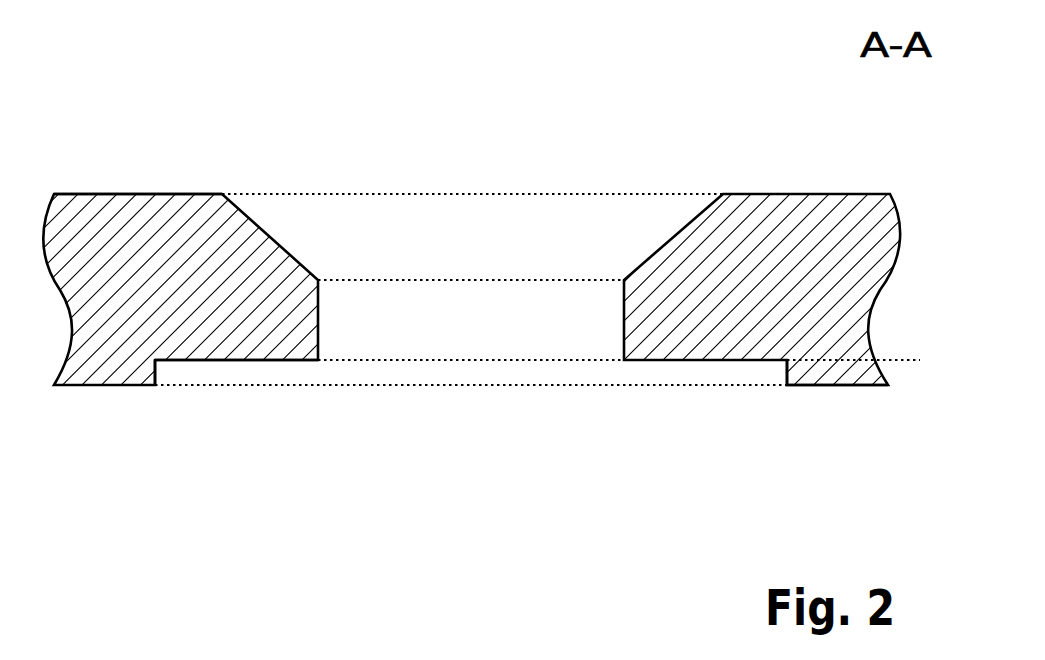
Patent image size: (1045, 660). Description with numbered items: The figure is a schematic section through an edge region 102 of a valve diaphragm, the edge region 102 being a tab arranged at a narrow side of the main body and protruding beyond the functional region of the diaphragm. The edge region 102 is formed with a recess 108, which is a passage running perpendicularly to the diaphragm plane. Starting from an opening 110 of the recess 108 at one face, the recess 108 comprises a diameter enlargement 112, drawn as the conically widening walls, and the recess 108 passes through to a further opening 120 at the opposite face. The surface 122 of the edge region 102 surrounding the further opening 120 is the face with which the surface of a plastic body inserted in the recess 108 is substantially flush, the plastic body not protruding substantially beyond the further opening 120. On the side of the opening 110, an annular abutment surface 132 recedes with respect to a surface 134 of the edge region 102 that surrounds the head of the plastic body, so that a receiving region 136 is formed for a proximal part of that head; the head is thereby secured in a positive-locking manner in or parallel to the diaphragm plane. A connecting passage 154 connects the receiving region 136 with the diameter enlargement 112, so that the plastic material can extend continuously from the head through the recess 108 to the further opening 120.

The edge region 102 is at (118, 222).
The recess 108 is at (383, 217).
The opening 110 is at (390, 387).
The diameter enlargement 112 is at (651, 253).
The further opening 120 is at (494, 192).
The surface 122 is at (170, 192).
The abutment surface 132 is at (228, 362).
The surface 134 is at (830, 387).
The receiving region 136 is at (717, 388).
The connecting passage 154 is at (478, 332).